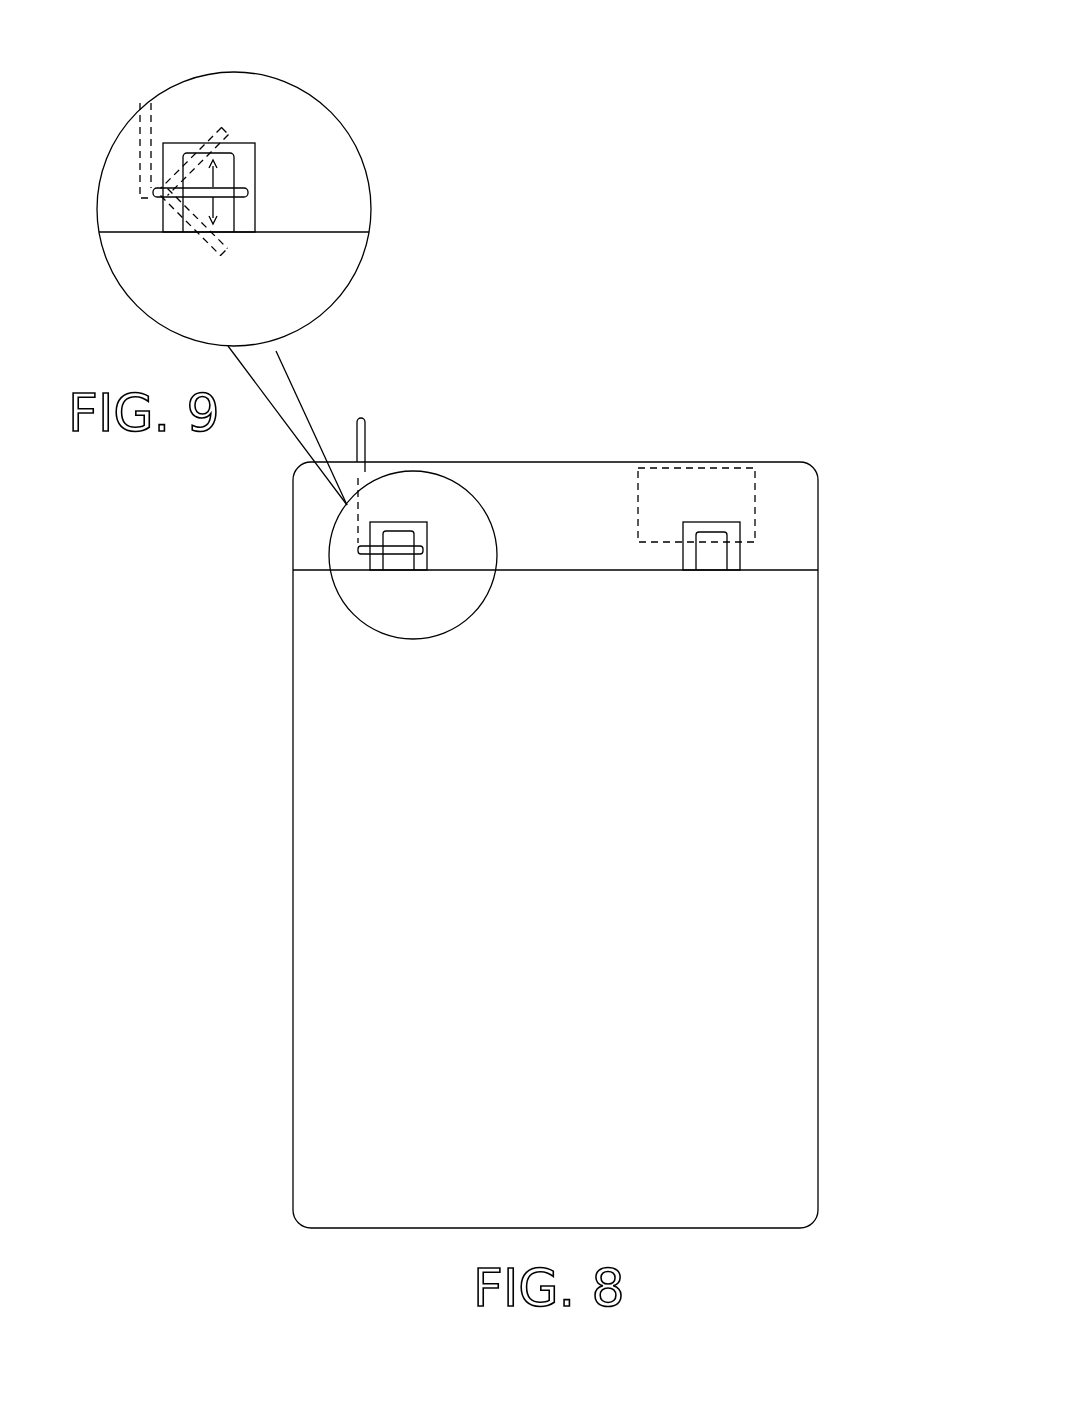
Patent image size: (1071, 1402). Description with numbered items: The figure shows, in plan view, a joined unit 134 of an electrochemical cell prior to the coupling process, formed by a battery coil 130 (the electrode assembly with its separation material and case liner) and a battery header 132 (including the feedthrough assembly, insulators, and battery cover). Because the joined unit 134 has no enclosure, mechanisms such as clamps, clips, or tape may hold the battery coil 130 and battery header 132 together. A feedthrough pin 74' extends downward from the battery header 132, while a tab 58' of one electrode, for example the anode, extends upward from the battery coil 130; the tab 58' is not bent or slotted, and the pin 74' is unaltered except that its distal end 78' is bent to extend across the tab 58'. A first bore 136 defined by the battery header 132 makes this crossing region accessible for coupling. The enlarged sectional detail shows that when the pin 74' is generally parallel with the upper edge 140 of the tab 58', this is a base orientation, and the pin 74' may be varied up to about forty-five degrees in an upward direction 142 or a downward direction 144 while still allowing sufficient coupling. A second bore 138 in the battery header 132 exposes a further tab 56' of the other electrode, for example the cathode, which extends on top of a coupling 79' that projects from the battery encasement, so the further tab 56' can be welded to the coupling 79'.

In FIG. 8, the battery coil 130 is at (818, 878).
In FIG. 8, the battery header 132 is at (818, 517).
In FIG. 8, the joined unit 134 is at (860, 663).
In FIG. 9, the first bore 136 is at (257, 177).
In FIG. 8, the first bore 136 is at (427, 537).
In FIG. 8, the second bore 138 is at (742, 553).
In FIG. 9, the upper edge of the tab 140 is at (186, 160).
In FIG. 9, the upward direction 142 is at (235, 178).
In FIG. 9, the downward direction 144 is at (223, 202).
In FIG. 8, the further tab 56' is at (692, 593).
In FIG. 9, the tab 58' is at (335, 208).
In FIG. 8, the tab 58' is at (435, 610).
In FIG. 9, the feedthrough pin 74' is at (103, 135).
In FIG. 8, the feedthrough pin 74' is at (396, 447).
In FIG. 8, the distal end of the pin 78' is at (329, 594).
In FIG. 8, the coupling 79' is at (728, 451).